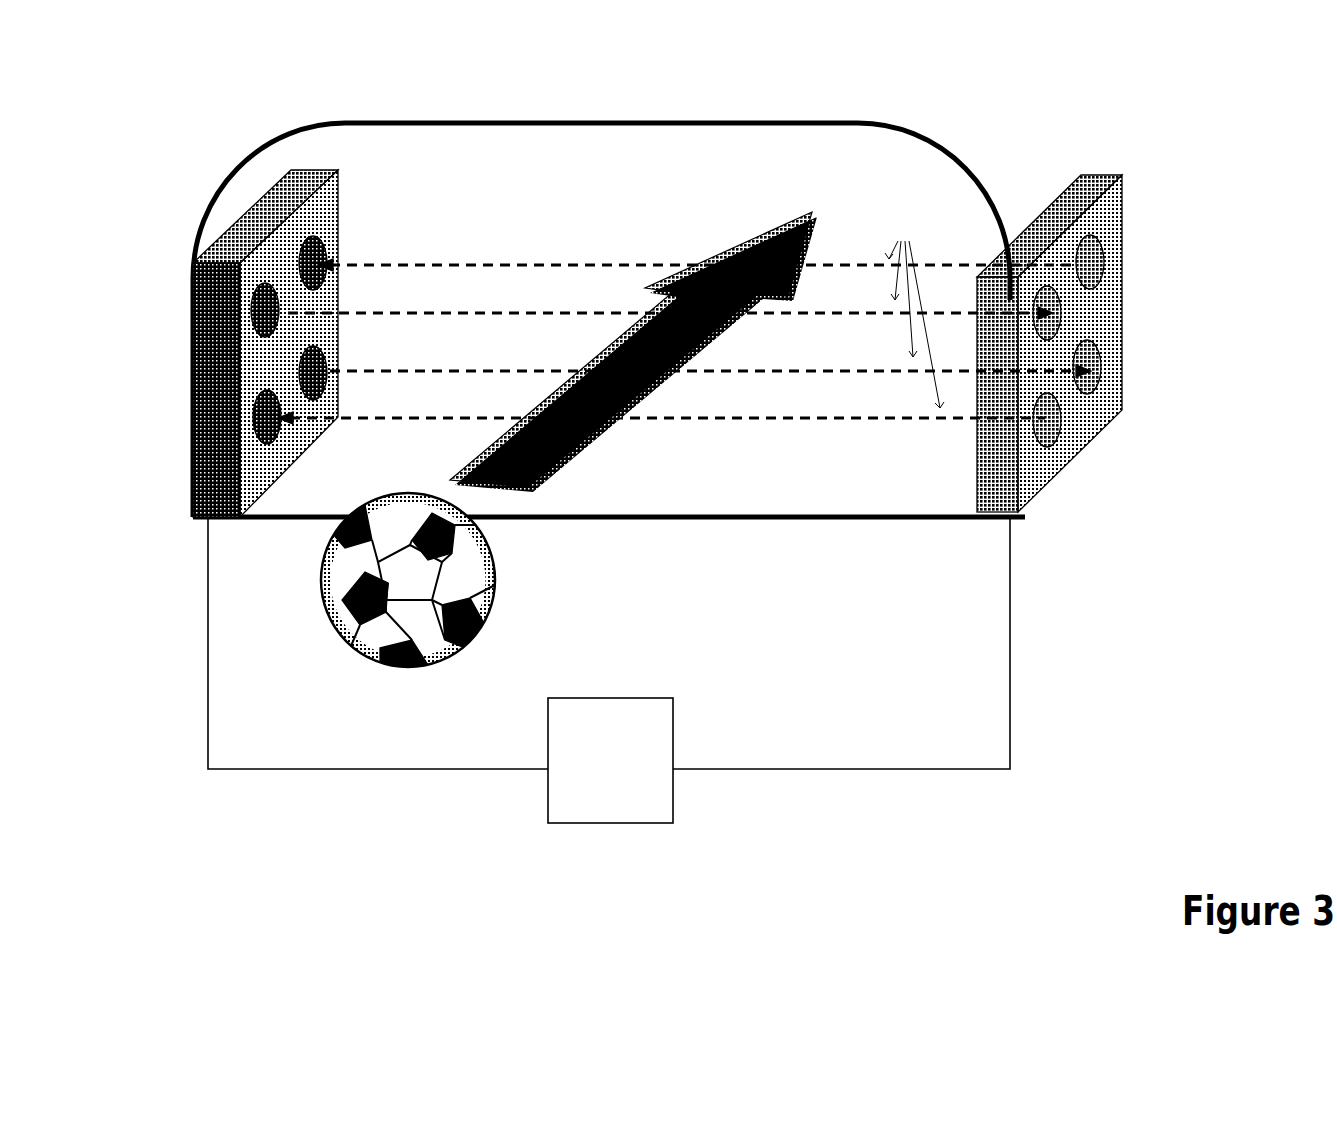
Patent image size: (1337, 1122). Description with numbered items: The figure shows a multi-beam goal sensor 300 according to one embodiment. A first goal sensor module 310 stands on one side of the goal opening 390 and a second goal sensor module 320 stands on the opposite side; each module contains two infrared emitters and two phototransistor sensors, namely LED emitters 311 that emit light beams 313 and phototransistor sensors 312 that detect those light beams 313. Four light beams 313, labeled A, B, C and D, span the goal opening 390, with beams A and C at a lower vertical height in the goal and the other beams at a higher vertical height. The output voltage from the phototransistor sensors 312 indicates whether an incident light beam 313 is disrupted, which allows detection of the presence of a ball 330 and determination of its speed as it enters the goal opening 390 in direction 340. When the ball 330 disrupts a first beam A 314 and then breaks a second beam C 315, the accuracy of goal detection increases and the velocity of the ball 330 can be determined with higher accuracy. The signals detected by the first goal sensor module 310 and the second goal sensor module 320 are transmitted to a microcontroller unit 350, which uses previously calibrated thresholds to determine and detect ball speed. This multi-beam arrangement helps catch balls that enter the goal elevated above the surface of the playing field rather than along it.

The multi-beam goal sensor 300 is at (587, 35).
The first goal sensor module 310 is at (265, 343).
The LED emitters 311 is at (302, 378).
The phototransistor sensors 312 is at (308, 255).
The light beams 313 is at (914, 312).
The first beam "A" 314 is at (661, 428).
The second beam "C" 315 is at (670, 323).
The second goal sensor module 320 is at (1049, 343).
The ball 330 is at (395, 591).
The direction 340 is at (633, 352).
The microcontroller unit 350 is at (609, 670).
The goal opening 390 is at (609, 320).